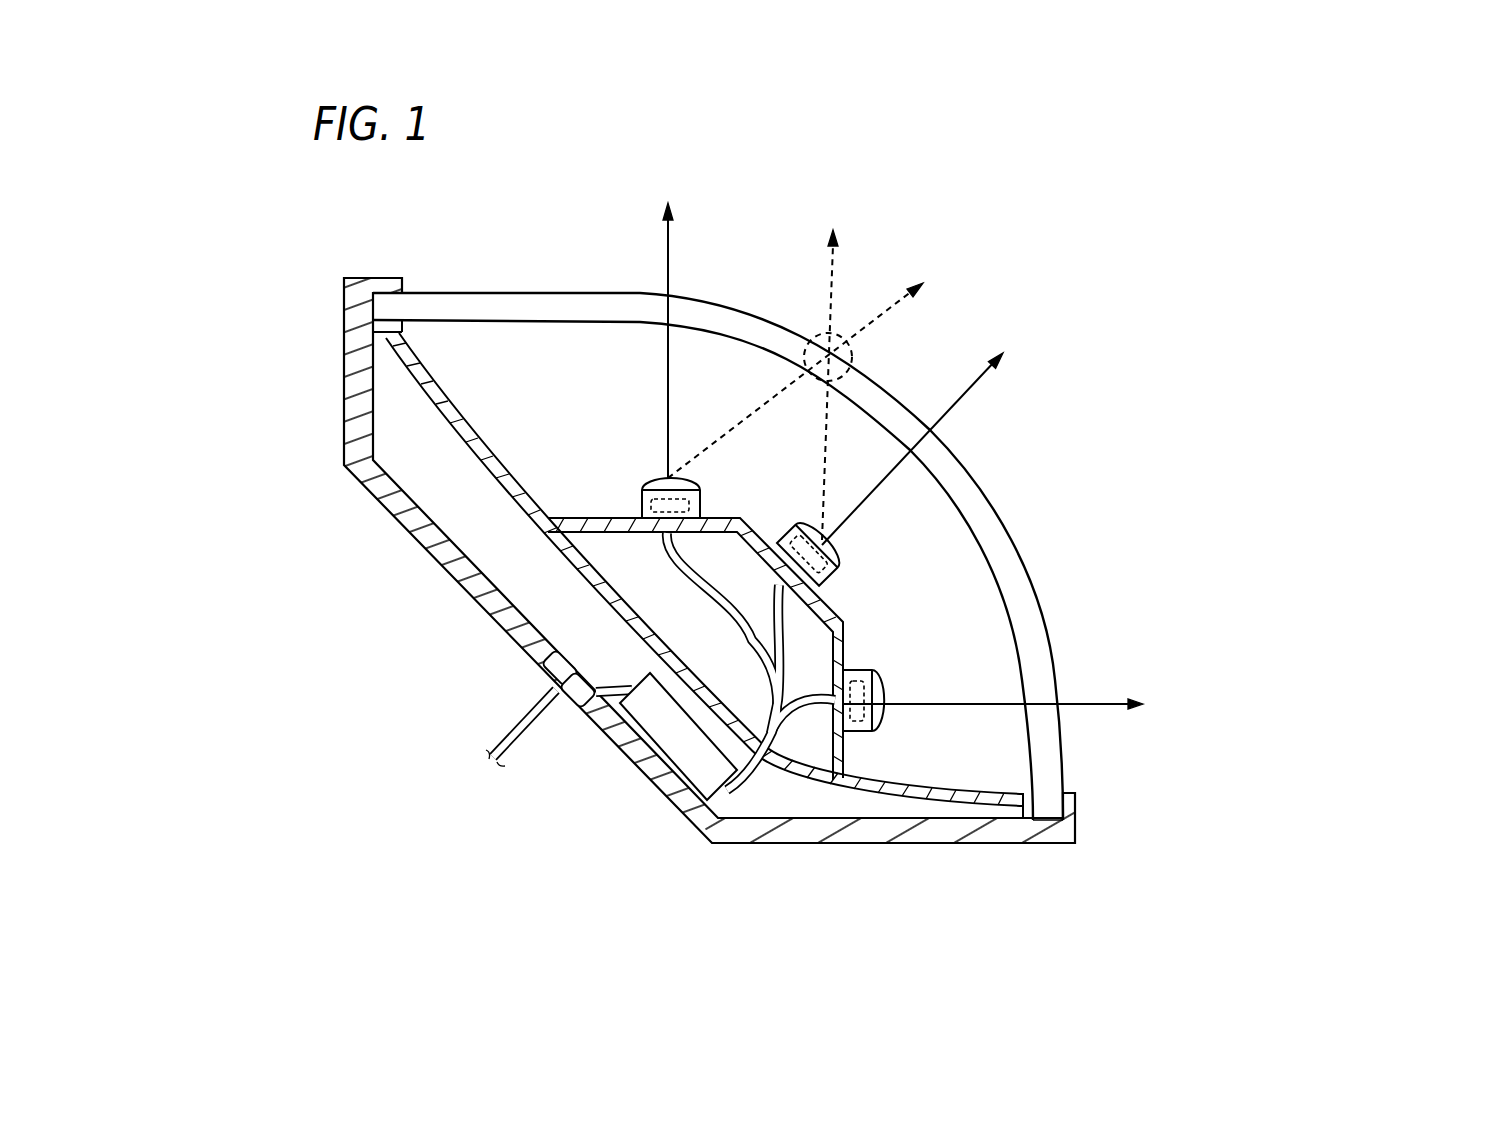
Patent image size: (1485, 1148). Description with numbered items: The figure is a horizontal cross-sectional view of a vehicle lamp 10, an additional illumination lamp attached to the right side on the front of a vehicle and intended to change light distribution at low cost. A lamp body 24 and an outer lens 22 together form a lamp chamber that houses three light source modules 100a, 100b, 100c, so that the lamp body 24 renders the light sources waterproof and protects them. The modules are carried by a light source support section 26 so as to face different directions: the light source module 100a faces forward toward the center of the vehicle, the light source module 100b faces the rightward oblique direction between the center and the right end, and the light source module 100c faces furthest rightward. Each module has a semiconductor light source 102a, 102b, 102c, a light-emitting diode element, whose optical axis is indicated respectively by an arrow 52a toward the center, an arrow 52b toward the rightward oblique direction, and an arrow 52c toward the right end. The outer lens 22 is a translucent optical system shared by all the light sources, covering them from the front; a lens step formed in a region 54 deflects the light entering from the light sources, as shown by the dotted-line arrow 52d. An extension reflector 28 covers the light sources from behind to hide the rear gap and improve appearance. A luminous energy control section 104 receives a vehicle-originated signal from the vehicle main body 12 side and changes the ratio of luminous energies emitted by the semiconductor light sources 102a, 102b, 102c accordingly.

The vehicle lamp 10 is at (1000, 272).
The vehicle main body 12 is at (486, 772).
The outer lens 22 is at (1000, 538).
The lamp body 24 is at (868, 840).
The light source support section 26 is at (833, 607).
The extension reflector 28 is at (993, 790).
The arrow 52a is at (669, 237).
The arrow 52b is at (968, 393).
The arrow 52c is at (1100, 703).
The arrow 52d is at (833, 293).
The region 54 is at (853, 349).
The light source module 100a is at (700, 506).
The light source module 100b is at (827, 587).
The light source module 100c is at (860, 733).
The semiconductor light source 102a is at (646, 484).
The semiconductor light source 102b is at (830, 550).
The semiconductor light source 102c is at (913, 677).
The luminous energy control section 104 is at (665, 745).